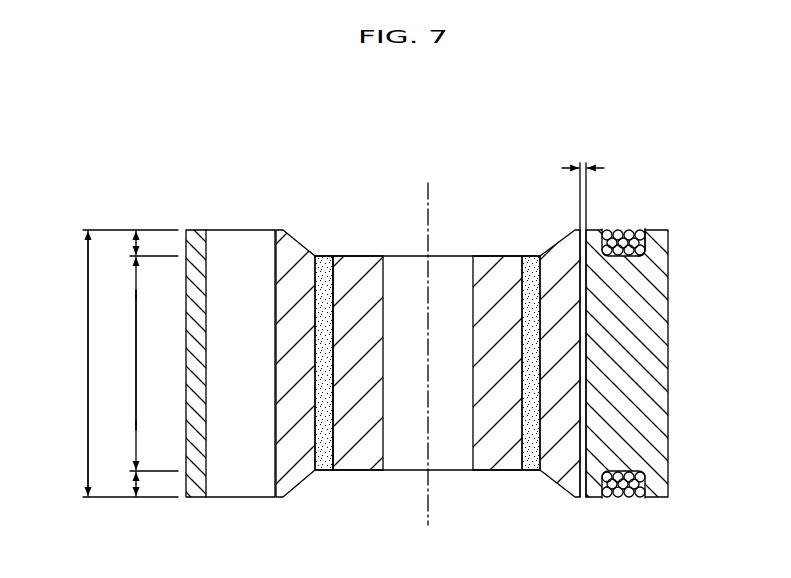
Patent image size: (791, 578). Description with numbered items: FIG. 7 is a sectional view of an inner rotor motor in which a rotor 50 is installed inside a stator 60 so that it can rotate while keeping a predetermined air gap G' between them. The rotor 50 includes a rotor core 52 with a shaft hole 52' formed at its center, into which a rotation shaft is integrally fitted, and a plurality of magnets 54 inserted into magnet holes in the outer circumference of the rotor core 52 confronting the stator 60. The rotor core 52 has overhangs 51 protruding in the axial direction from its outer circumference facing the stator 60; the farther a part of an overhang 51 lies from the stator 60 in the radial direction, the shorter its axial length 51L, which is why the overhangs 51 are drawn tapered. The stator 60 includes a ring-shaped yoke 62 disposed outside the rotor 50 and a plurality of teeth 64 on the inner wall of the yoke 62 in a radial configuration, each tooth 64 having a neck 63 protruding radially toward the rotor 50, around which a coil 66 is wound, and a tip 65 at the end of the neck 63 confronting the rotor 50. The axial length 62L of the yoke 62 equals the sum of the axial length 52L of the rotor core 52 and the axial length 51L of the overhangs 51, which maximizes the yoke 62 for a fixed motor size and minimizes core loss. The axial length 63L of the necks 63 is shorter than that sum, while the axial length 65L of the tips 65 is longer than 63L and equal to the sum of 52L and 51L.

The rotor 50 is at (443, 242).
The overhang 51 is at (297, 258).
The rotor core 52 is at (366, 331).
The shaft hole 52' is at (491, 343).
The magnet 54 is at (325, 267).
The stator 60 is at (645, 321).
The yoke 62 is at (663, 231).
The neck 63 is at (638, 238).
The tooth 64 is at (638, 321).
The tip 65 is at (597, 230).
The coil 66 is at (645, 242).
The air gap G' is at (583, 156).
The axial length of overhangs 51L is at (117, 363).
The axial length of rotor core 52L is at (116, 363).
The axial length of yoke 62L is at (66, 363).
The axial length of necks 63L is at (121, 360).
The axial length of tips 65L is at (70, 363).